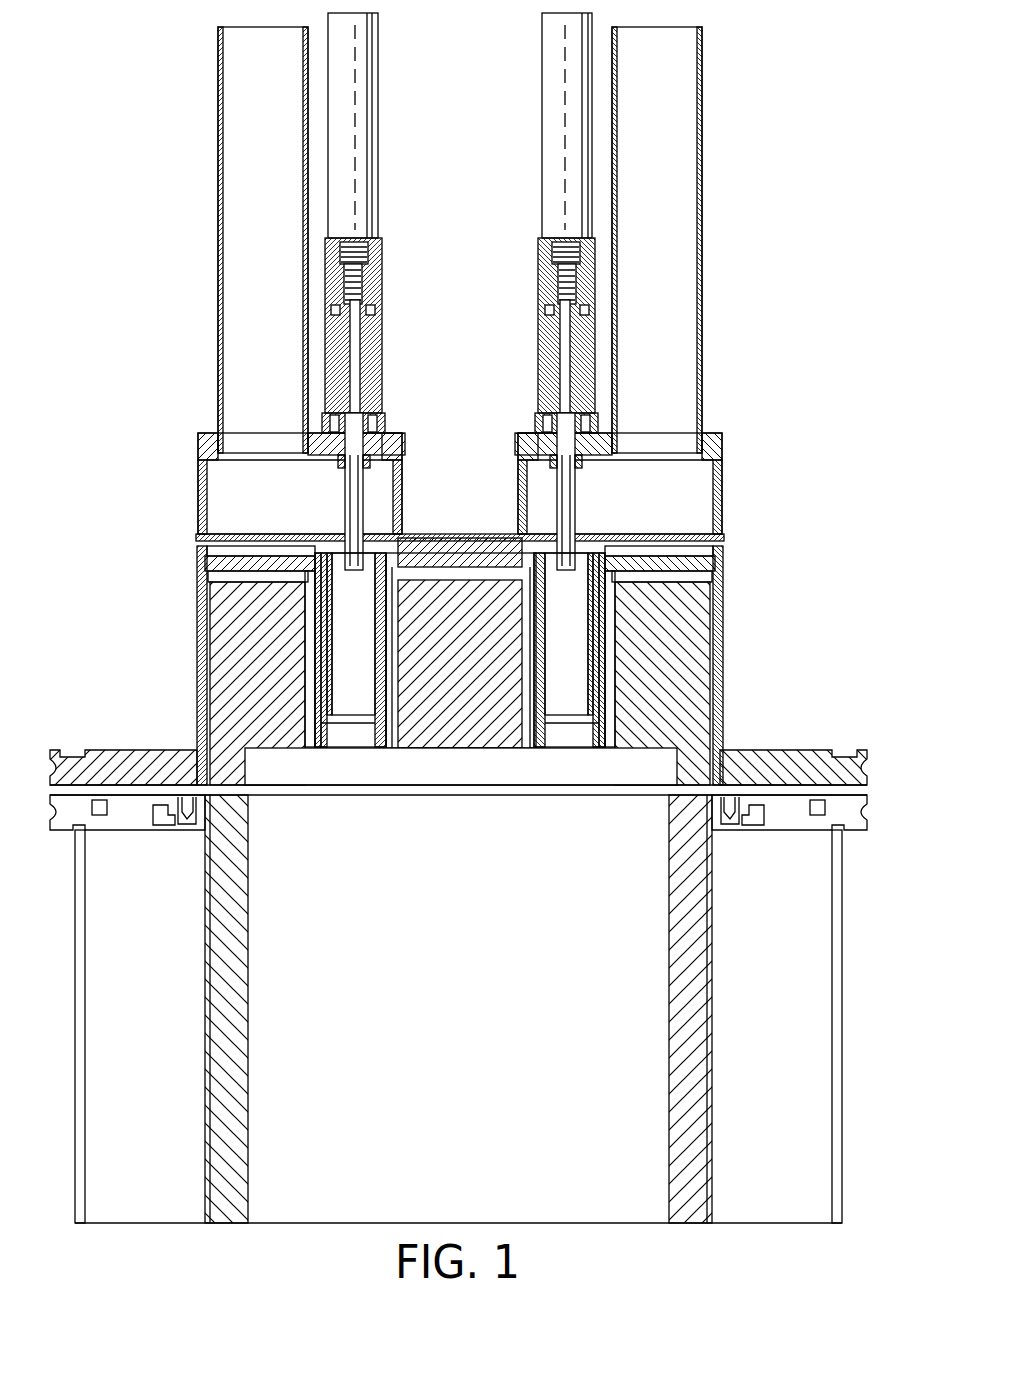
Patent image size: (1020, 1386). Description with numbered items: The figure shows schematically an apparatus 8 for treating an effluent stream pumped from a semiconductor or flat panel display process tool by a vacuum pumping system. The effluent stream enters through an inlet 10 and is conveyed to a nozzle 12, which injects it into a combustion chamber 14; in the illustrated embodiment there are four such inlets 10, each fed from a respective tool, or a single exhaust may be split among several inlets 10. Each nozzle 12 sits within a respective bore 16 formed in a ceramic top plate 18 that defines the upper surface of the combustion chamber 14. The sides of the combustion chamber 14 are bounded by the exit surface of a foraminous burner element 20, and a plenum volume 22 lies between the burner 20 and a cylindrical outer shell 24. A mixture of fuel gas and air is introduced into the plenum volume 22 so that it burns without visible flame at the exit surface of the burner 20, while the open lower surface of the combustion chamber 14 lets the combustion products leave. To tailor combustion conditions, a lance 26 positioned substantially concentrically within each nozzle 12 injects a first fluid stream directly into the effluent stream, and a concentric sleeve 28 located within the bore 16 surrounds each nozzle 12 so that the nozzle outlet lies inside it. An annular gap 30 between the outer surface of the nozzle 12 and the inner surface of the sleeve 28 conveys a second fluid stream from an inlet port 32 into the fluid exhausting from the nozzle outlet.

The apparatus 8 is at (182, 701).
The inlet 10 is at (688, 120).
The nozzle 12 is at (591, 655).
The combustion chamber 14 is at (474, 1011).
The bore 16 is at (523, 733).
The ceramic top plate 18 is at (700, 605).
The foraminous burner element 20 is at (675, 960).
The plenum volume 22 is at (820, 868).
The cylindrical outer shell 24 is at (843, 922).
The lance 26 is at (570, 497).
The sleeve 28 is at (605, 718).
The annular gap 30 is at (598, 684).
The inlet port 32 is at (715, 543).